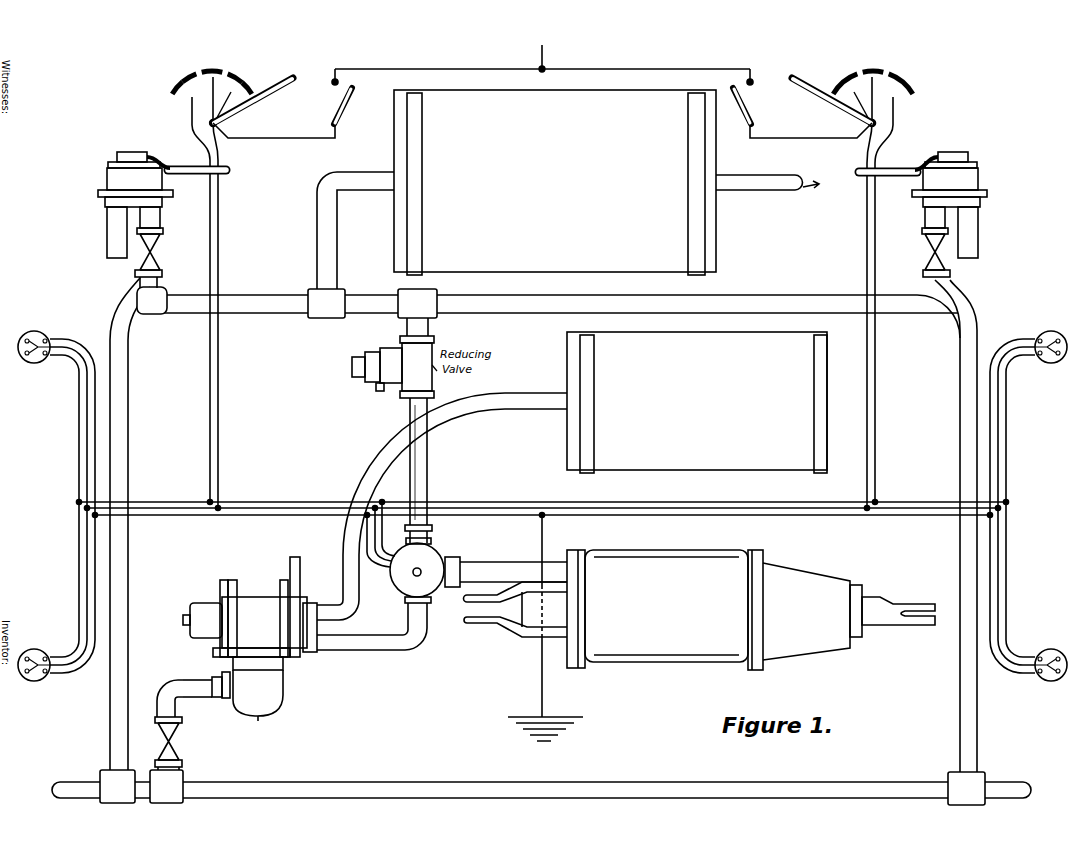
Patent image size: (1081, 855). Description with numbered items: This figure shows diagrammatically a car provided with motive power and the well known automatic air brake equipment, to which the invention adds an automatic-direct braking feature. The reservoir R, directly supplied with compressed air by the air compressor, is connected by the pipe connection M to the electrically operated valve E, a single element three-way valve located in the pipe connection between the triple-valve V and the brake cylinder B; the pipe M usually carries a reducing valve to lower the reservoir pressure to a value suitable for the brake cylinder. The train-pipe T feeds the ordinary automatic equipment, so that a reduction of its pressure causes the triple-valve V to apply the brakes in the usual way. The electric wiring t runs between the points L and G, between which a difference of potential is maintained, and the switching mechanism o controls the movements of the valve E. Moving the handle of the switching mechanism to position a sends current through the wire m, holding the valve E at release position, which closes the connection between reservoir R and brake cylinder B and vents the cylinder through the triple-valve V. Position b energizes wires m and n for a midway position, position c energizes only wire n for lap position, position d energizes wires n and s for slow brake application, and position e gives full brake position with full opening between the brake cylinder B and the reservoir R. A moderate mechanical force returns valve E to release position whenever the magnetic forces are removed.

The reservoir R is at (625, 182).
The brake cylinder B is at (751, 610).
The triple-valve V is at (250, 607).
The electrically operated valve E is at (425, 571).
The pipe connection M is at (429, 464).
The electric wiring t is at (542, 523).
The point G is at (545, 627).
The point L is at (542, 56).
The train-pipe T is at (541, 782).
The position a is at (252, 79).
The position b is at (235, 68).
The position c is at (212, 61).
The position d is at (189, 68).
The position e is at (174, 79).
The wire s is at (195, 128).
The wire n is at (209, 118).
The wire m is at (225, 108).
The switching mechanism o is at (252, 102).